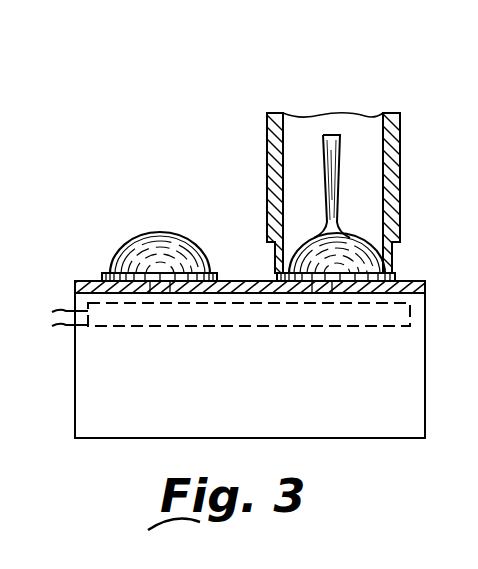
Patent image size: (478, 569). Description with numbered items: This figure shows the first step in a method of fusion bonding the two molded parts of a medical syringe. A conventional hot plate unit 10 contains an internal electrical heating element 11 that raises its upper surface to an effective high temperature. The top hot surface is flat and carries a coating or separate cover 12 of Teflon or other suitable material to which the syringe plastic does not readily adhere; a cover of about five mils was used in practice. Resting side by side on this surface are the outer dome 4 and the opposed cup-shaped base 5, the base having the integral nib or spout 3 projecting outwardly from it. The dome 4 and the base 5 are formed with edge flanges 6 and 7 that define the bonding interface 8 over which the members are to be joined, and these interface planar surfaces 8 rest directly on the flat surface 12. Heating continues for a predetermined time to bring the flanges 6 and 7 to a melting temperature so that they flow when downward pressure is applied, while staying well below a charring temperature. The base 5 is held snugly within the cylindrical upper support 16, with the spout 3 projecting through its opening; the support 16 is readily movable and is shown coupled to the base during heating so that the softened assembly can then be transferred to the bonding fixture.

The spout 3 is at (340, 173).
The dome 4 is at (161, 212).
The base 5 is at (360, 246).
The edge flange 6 is at (106, 272).
The edge flange 7 is at (397, 278).
The bonding interface 8 is at (190, 283).
The hot plate unit 10 is at (122, 434).
The electrical heating element 11 is at (242, 301).
The cover 12 is at (426, 288).
The upper support 16 is at (272, 142).